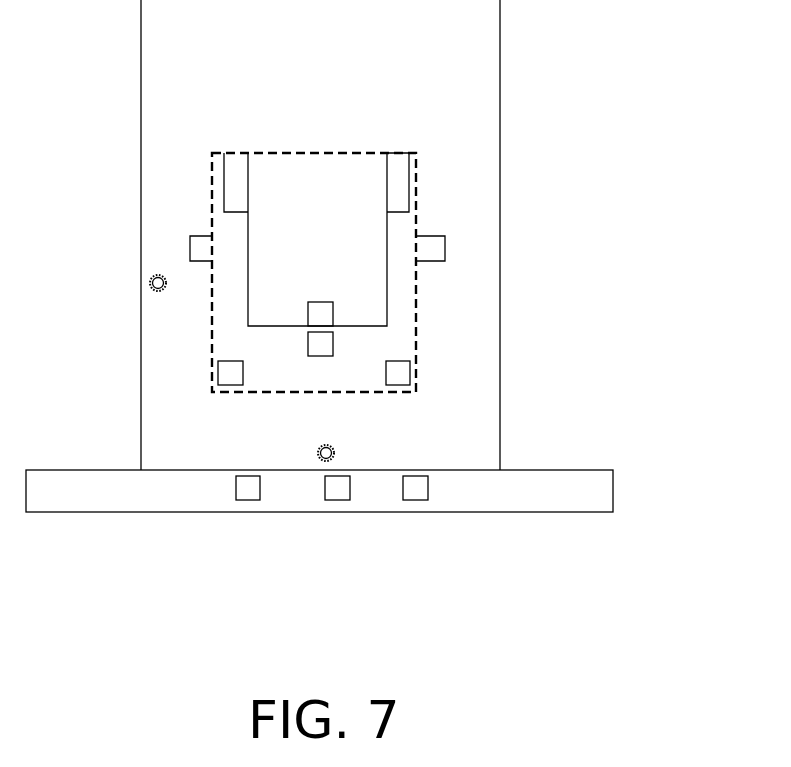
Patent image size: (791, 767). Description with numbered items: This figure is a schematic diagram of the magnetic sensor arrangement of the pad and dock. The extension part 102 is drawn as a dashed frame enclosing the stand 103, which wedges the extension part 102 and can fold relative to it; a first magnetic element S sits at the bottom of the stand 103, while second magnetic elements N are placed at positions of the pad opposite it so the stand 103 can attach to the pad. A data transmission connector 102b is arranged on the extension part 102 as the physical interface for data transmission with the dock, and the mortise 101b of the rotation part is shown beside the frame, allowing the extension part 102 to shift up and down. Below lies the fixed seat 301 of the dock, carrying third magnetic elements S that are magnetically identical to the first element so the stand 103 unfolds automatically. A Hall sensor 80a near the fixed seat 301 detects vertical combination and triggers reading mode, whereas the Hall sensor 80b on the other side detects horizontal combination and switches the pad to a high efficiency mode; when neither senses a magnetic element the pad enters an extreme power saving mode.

The fixed seat 301 is at (605, 493).
The extension part 102 is at (416, 334).
The data transmission connector 102b is at (397, 160).
The mortise 101b is at (445, 245).
The stand 103 is at (380, 300).
The Hall sensor 80b is at (150, 283).
The Hall sensor 80a is at (318, 462).